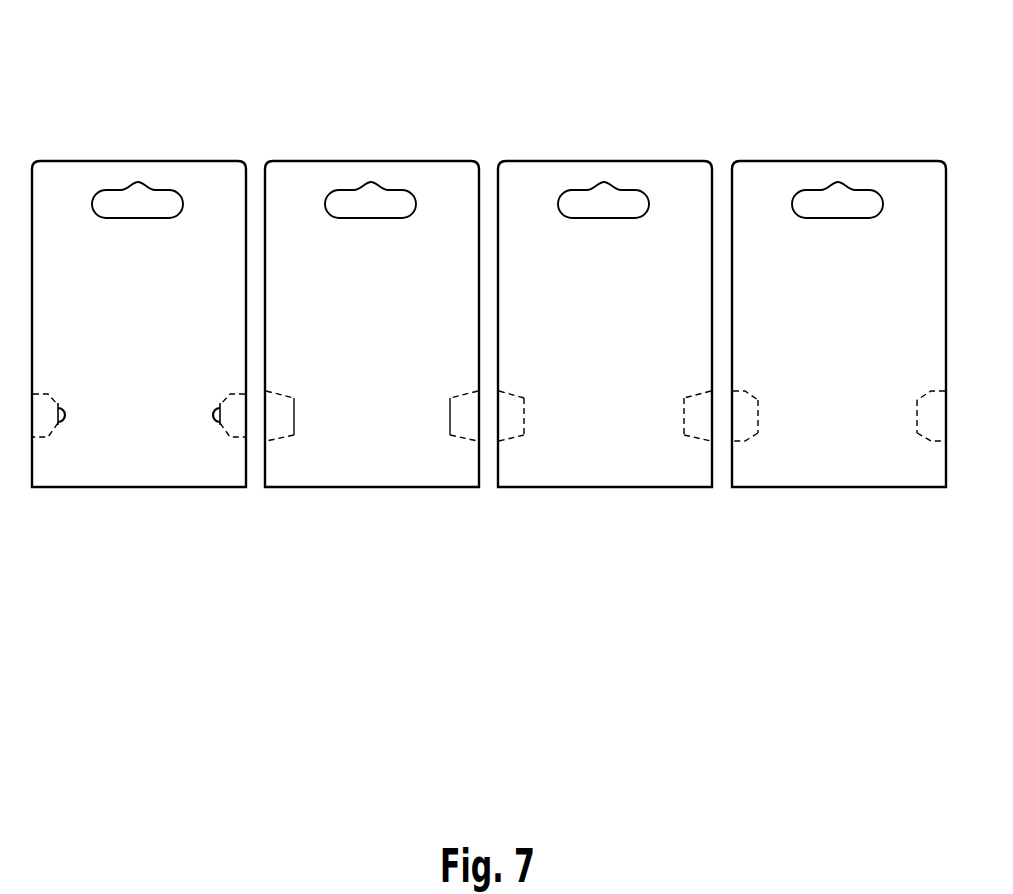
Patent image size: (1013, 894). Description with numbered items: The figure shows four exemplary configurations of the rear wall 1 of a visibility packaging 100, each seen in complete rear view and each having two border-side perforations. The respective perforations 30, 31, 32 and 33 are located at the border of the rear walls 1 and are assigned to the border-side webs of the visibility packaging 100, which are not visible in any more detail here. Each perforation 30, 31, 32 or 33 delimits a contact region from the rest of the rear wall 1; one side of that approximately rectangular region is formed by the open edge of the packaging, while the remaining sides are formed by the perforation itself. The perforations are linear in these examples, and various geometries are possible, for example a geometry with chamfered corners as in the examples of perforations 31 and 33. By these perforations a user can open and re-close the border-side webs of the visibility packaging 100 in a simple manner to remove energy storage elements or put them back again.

The visibility packaging 100 is at (489, 287).
The rear wall 1 is at (183, 270).
The perforation 30 is at (512, 437).
The perforation 31 is at (750, 437).
The perforation 32 is at (287, 437).
The perforation 33 is at (53, 437).